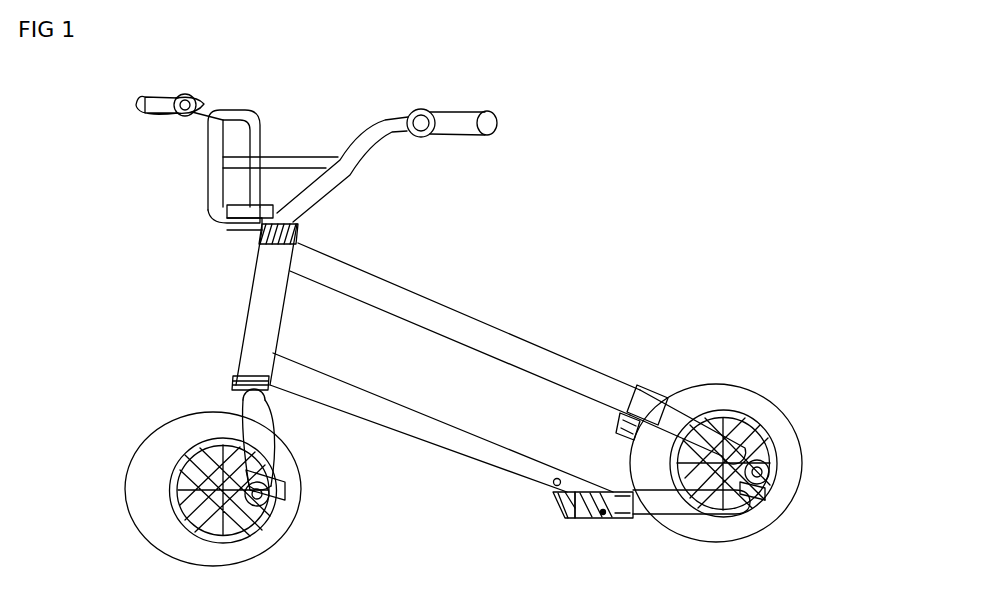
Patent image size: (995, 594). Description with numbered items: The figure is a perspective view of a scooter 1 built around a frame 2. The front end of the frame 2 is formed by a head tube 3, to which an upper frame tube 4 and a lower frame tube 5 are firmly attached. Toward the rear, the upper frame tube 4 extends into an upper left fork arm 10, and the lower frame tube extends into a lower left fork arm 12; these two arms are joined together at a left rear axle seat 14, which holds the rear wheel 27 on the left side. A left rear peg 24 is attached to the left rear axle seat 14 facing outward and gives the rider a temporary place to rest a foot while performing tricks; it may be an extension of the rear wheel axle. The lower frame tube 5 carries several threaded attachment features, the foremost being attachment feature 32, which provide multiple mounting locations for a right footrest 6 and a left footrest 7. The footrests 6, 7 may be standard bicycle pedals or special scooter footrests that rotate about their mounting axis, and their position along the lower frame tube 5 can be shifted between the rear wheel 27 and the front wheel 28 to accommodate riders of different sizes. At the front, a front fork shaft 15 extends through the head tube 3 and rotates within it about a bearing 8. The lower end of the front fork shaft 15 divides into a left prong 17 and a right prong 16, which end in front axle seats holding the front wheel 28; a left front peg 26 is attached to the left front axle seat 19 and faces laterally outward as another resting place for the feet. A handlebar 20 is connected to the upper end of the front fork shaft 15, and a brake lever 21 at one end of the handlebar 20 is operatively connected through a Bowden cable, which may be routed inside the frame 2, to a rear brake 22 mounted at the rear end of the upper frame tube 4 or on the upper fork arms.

The scooter 1 is at (591, 216).
The frame 2 is at (410, 288).
The head tube 3 is at (265, 308).
The upper frame tube 4 is at (475, 338).
The lower frame tube 5 is at (438, 428).
The right footrest 6 is at (550, 497).
The left footrest 7 is at (572, 507).
The bearing 8 is at (290, 236).
The upper left fork arm 10 is at (663, 412).
The lower left fork arm 12 is at (653, 507).
The left rear axle seat 14 is at (745, 488).
The front fork shaft 15 is at (235, 392).
The right prong 16 is at (216, 400).
The left prong 17 is at (275, 413).
The left front axle seat 19 is at (253, 482).
The handlebar 20 is at (290, 160).
The brake lever 21 is at (183, 117).
The rear brake 22 is at (642, 400).
The left rear peg 24 is at (763, 473).
The left front peg 26 is at (258, 503).
The rear wheel 27 is at (787, 432).
The front wheel 28 is at (147, 487).
The attachment feature 32 is at (552, 480).